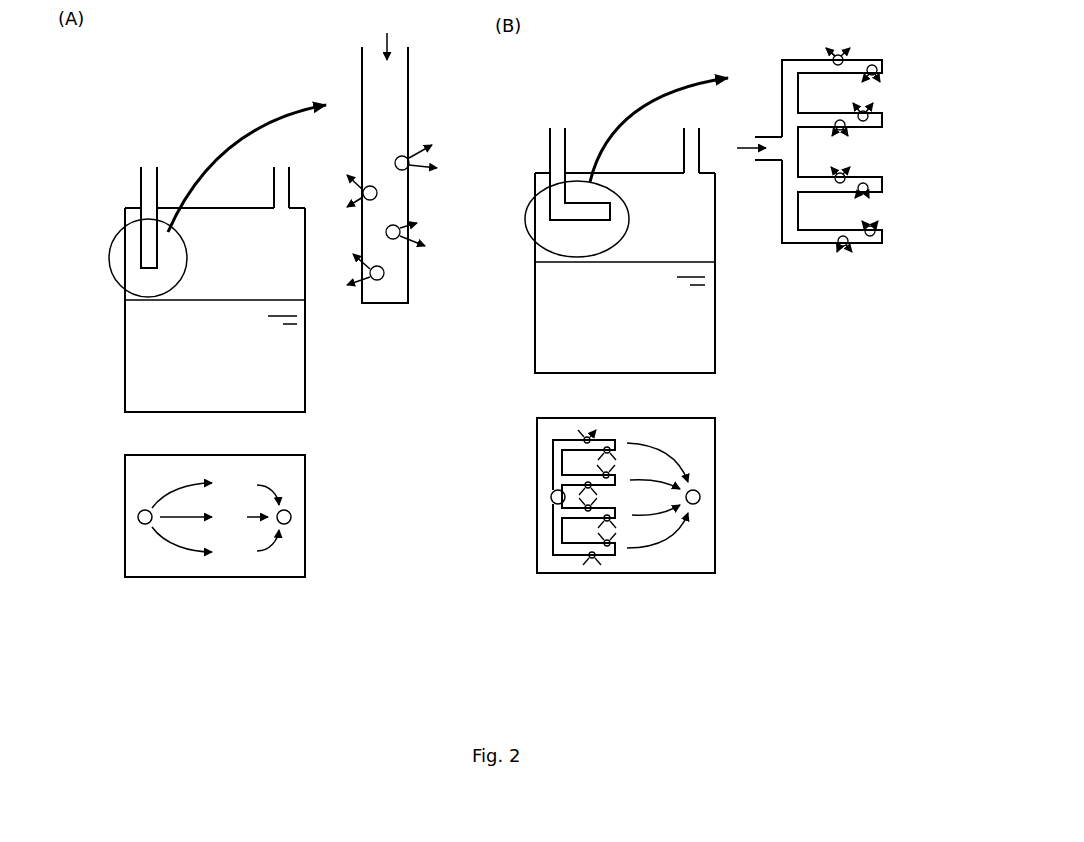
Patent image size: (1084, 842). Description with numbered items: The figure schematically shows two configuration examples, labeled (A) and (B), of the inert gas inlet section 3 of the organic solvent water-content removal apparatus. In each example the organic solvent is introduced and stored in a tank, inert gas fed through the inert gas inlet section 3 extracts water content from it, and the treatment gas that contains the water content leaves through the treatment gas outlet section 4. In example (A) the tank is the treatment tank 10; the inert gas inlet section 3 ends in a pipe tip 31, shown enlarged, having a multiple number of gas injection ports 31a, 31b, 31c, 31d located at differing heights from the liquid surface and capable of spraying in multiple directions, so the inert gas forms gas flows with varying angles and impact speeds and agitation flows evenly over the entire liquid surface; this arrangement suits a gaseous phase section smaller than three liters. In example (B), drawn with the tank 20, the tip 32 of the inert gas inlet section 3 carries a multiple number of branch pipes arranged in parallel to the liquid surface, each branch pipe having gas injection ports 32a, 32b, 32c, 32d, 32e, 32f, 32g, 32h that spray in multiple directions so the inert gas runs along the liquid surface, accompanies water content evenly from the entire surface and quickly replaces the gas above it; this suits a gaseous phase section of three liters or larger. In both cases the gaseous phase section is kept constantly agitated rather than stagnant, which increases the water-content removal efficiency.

The inert gas inlet section 3 is at (140, 183).
The treatment gas outlet section 4 is at (273, 183).
The treatment tank 10 is at (305, 355).
The cooling treatment tank 20 is at (715, 320).
The inlet nozzle pipe 31 is at (410, 92).
The gas injection port 31a is at (404, 172).
The gas injection port 31b is at (365, 184).
The gas injection port 31c is at (398, 240).
The gas injection port 31d is at (378, 279).
The tip of inert gas inlet section 32 is at (563, 222).
The gas injection port 32a is at (833, 60).
The gas injection port 32b is at (877, 70).
The gas injection port 32c is at (837, 120).
The gas injection port 32d is at (868, 119).
The gas injection port 32e is at (841, 182).
The gas injection port 32f is at (862, 186).
The gas injection port 32g is at (837, 243).
The gas injection port 32h is at (873, 243).